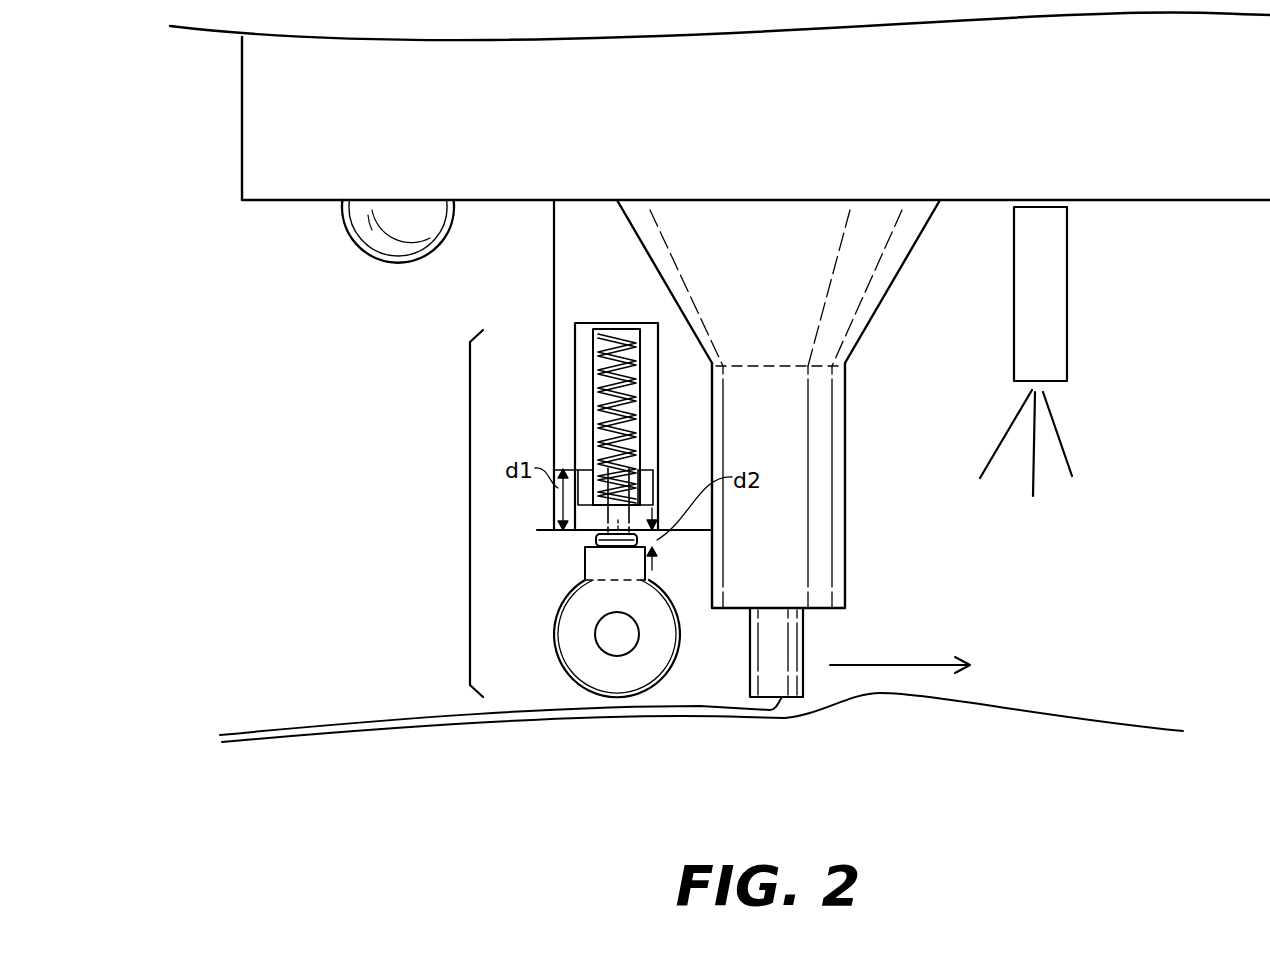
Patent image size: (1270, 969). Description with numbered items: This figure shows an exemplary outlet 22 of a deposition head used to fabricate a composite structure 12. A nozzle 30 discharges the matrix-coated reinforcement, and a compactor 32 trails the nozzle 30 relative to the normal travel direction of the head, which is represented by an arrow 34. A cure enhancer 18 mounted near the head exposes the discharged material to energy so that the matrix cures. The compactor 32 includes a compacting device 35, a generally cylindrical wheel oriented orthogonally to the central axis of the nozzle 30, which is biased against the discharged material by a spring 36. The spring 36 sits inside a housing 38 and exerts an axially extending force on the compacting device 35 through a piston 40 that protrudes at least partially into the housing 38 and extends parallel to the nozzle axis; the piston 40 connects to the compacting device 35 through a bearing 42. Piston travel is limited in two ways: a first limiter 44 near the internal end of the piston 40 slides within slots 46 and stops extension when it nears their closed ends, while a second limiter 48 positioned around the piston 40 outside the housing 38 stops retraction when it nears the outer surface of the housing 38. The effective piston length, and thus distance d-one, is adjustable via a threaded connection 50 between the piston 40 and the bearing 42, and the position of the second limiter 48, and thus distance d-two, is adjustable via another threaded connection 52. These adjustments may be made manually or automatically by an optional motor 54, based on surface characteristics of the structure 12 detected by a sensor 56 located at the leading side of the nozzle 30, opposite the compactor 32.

The composite structure 12 is at (268, 740).
The cure enhancer 18 is at (400, 262).
The outlet 22 is at (205, 441).
The nozzle 30 is at (832, 540).
The compactor 32 is at (470, 517).
The arrow 34 is at (890, 665).
The compacting device 35 is at (572, 680).
The spring 36 is at (640, 418).
The housing 38 is at (604, 323).
The piston 40 is at (622, 516).
The bearing 42 is at (606, 646).
The first limiter 44 is at (585, 470).
The slots 46 is at (578, 334).
The second limiter 48 is at (609, 530).
The threaded connection 50 is at (592, 540).
The threaded connection 52 is at (590, 550).
The motor 54 is at (640, 570).
The sensor 56 is at (1028, 306).